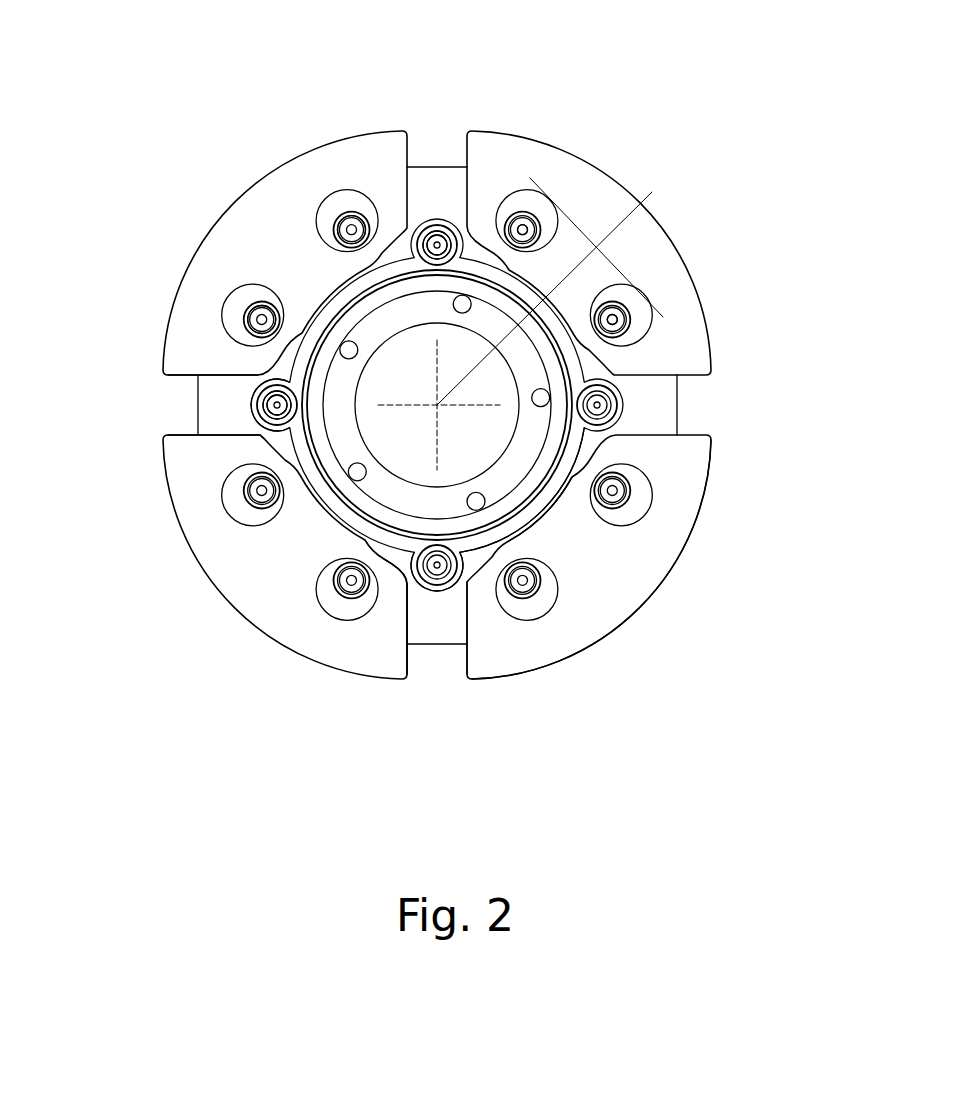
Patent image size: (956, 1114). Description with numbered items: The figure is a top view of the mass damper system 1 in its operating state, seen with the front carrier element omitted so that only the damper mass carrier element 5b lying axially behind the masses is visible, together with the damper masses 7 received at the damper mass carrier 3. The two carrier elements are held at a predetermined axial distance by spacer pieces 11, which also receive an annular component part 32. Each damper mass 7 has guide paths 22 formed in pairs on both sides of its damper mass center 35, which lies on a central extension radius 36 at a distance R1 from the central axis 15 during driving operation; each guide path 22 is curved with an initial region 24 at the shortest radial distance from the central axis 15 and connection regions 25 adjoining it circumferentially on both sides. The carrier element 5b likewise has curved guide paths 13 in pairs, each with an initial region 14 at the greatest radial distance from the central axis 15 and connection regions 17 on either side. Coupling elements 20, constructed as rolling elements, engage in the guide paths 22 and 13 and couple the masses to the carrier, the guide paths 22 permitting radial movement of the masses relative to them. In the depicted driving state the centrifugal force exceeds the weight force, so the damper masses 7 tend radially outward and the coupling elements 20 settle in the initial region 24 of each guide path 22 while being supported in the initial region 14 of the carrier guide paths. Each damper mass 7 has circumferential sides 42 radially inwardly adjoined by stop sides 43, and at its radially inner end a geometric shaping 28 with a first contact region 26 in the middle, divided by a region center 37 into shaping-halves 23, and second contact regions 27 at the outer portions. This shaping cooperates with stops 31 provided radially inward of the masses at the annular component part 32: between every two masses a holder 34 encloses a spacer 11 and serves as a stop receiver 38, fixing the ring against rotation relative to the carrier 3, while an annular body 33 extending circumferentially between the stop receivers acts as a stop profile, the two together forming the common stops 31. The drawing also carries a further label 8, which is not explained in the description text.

The mass damper system 1 is at (243, 655).
The damper mass carrier 3 is at (422, 618).
The damper mass carrier element 5b is at (447, 603).
The damper masses 7 is at (630, 597).
The segment side face 8 is at (393, 650).
The spacer pieces 11 is at (441, 228).
The guide paths 13 is at (300, 228).
The initial region 14 is at (338, 232).
The central axis 15 is at (437, 405).
The connection regions 17 is at (372, 215).
The coupling elements 20 is at (232, 297).
The guide paths 22 is at (640, 282).
The shaping-halves 23 is at (595, 470).
The initial region 24 is at (517, 212).
The connection regions 25 is at (592, 296).
The first contact region 26 is at (545, 512).
The second contact regions 27 is at (552, 453).
The geometric shaping 28 is at (622, 585).
The stops 31 is at (363, 525).
The annular component part 32 is at (350, 492).
The annular body 33 is at (394, 575).
The holder 34 is at (258, 404).
The damper mass center 35 is at (600, 245).
The central extension radius 36 is at (632, 187).
The region center 37 is at (270, 420).
The stop receiver 38 is at (250, 422).
The circumferential sides 42 is at (424, 236).
The stop sides 43 is at (571, 491).